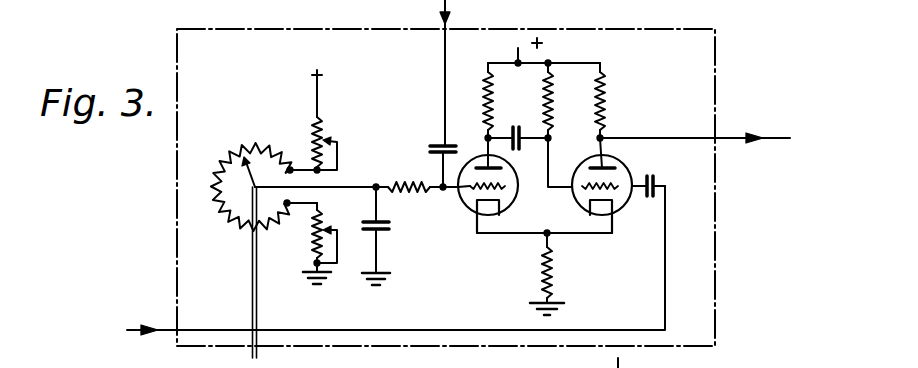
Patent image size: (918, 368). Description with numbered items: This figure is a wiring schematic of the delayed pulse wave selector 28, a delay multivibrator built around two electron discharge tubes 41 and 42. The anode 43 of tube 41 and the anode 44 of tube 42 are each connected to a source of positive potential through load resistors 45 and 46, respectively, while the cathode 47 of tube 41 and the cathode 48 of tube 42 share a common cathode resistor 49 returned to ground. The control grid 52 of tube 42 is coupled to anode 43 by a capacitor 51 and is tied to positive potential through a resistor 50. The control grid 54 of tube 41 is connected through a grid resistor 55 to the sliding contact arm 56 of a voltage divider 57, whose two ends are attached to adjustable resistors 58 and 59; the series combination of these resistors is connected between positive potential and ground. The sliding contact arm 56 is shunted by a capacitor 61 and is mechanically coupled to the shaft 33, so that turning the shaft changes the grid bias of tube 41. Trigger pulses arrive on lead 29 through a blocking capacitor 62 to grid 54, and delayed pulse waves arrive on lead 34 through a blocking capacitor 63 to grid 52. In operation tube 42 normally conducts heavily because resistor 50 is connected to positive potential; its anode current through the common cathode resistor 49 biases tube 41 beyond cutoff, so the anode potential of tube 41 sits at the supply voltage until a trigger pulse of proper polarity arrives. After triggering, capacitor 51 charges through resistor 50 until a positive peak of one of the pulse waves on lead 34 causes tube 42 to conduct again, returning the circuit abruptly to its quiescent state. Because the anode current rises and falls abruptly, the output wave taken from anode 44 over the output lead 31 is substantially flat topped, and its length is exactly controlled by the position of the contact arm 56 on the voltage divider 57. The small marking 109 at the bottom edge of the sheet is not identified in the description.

The delayed pulse wave selector 28 is at (715, 267).
The lead 29 is at (452, 10).
The output lead 31 is at (770, 134).
The shaft 33 is at (258, 354).
The lead 34 is at (130, 328).
The electron discharge tube 41 is at (510, 177).
The electron discharge tube 42 is at (593, 161).
The anode 43 is at (482, 152).
The anode 44 is at (617, 168).
The load resistor 45 is at (481, 80).
The load resistor 46 is at (606, 99).
The cathode 47 is at (493, 213).
The cathode 48 is at (607, 213).
The cathode resistor 49 is at (551, 270).
The resistor 50 is at (545, 106).
The capacitor 51 is at (526, 126).
The control grid 52 is at (582, 184).
The control grid 54 is at (473, 205).
The grid resistor 55 is at (414, 182).
The sliding contact arm 56 is at (220, 171).
The voltage divider 57 is at (268, 150).
The adjustable resistor 58 is at (330, 140).
The adjustable resistor 59 is at (310, 245).
The capacitor 61 is at (393, 229).
The blocking capacitor 62 is at (438, 145).
The blocking capacitor 63 is at (656, 183).
The lead 109 is at (640, 367).